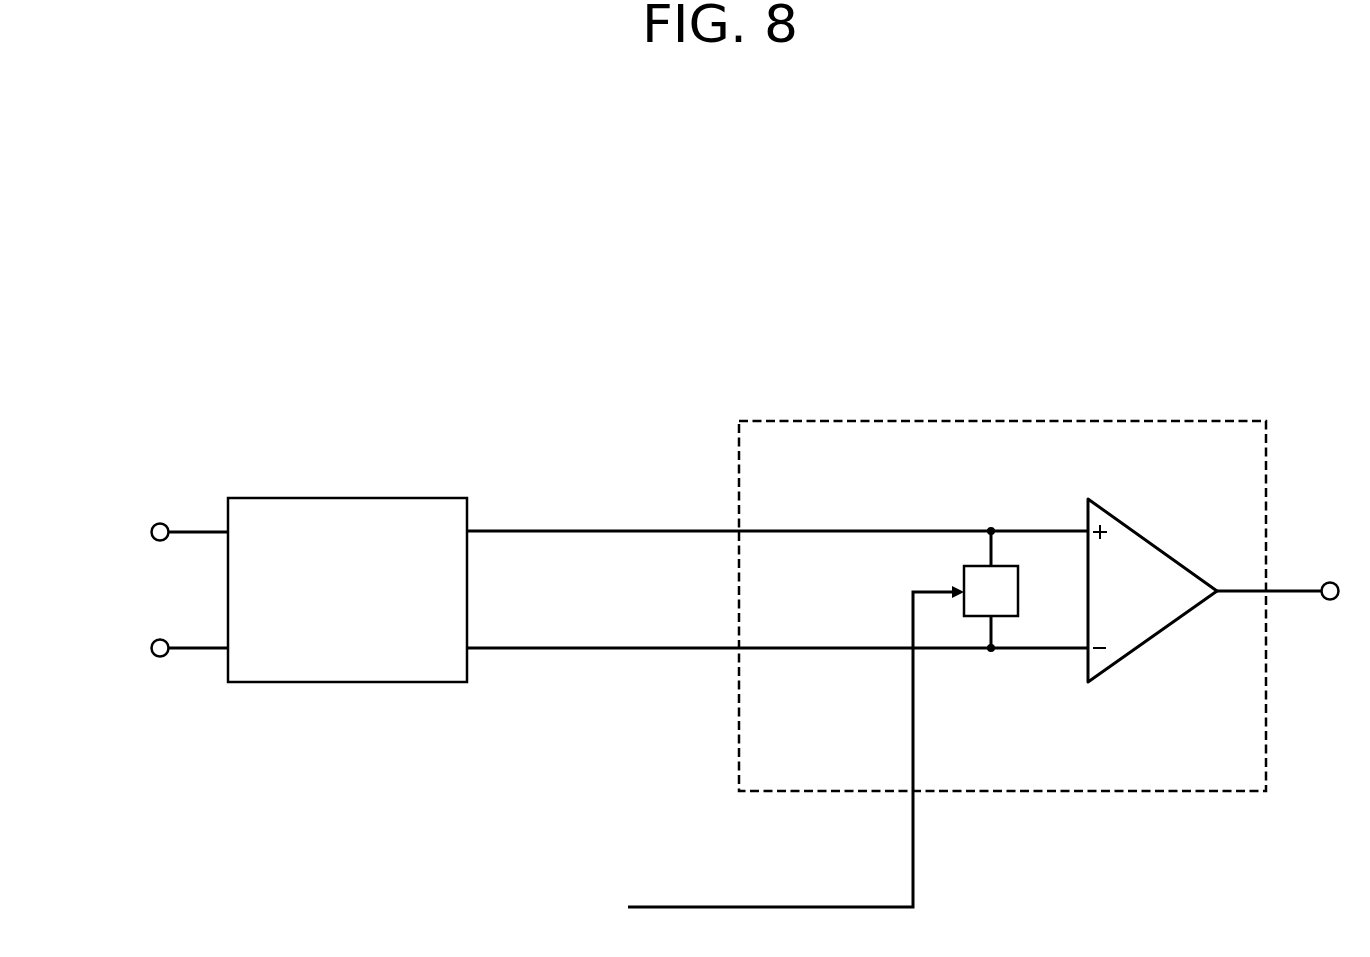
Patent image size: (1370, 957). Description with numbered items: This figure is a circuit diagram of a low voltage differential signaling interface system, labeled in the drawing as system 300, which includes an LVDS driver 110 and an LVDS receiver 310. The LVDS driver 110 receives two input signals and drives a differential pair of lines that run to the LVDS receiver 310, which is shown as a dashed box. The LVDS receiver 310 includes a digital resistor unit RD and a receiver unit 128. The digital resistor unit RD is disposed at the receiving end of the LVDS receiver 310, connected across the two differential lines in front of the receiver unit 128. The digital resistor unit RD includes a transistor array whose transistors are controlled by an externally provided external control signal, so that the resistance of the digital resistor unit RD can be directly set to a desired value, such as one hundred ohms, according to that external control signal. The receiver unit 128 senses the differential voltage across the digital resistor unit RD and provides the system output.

The LVDS transmission system 300 is at (716, 262).
The low voltage differential signaling (LVDS) driver 110 is at (347, 498).
The low voltage differential signaling (LVDS) receiver 310 is at (1002, 421).
The receiver unit 128 is at (1152, 545).